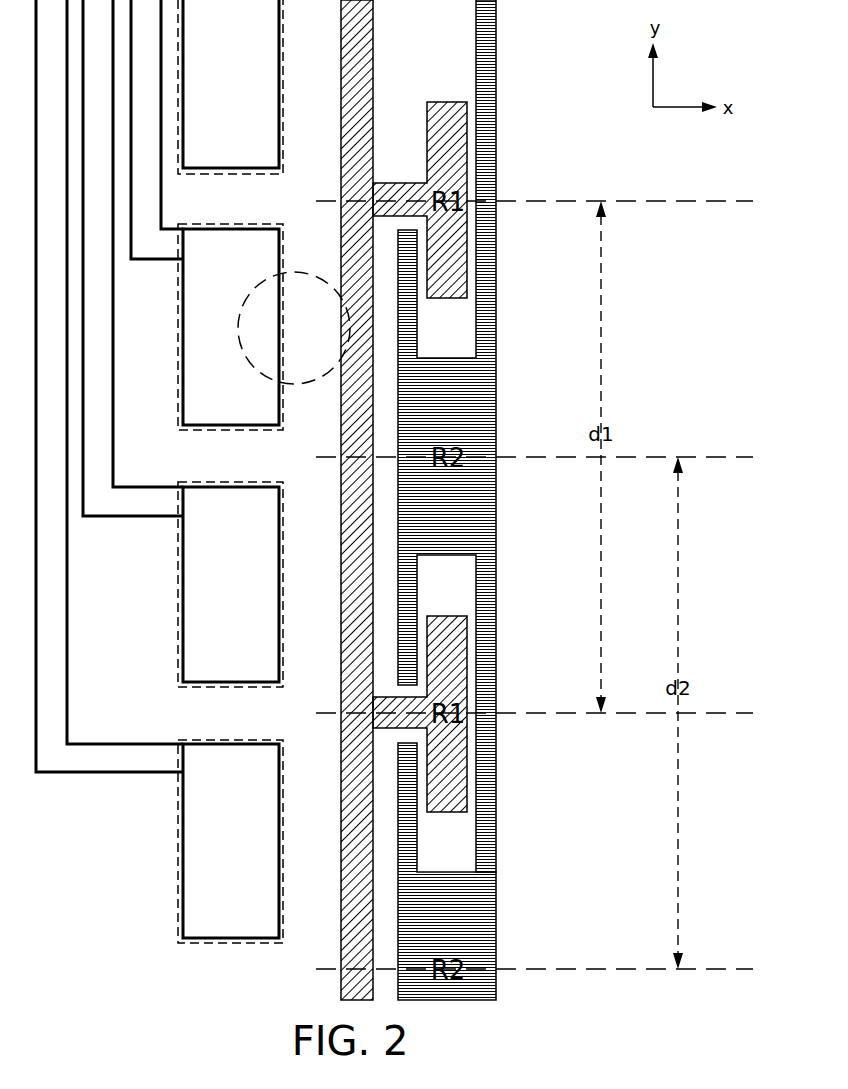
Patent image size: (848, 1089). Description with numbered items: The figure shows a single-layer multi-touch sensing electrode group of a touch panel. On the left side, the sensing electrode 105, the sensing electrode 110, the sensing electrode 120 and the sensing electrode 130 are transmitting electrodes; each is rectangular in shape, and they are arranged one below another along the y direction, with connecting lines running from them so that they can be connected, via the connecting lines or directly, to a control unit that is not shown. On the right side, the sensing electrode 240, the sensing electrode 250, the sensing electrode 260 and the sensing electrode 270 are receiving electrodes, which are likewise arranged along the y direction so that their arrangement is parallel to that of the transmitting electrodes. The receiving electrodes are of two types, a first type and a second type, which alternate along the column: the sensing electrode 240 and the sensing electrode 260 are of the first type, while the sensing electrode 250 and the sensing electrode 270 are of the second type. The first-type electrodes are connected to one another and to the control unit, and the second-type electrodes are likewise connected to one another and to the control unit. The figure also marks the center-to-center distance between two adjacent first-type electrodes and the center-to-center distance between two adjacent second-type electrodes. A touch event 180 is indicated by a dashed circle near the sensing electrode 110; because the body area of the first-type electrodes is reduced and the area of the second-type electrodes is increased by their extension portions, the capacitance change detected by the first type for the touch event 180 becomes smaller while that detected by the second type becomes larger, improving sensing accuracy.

The sensing electrode 105 is at (283, 142).
The sensing electrode 110 is at (245, 226).
The sensing electrode 120 is at (245, 485).
The sensing electrode 130 is at (245, 743).
The touch event 180 is at (310, 272).
The sensing electrode 240 is at (450, 106).
The sensing electrode 250 is at (496, 396).
The sensing electrode 260 is at (460, 650).
The sensing electrode 270 is at (496, 906).